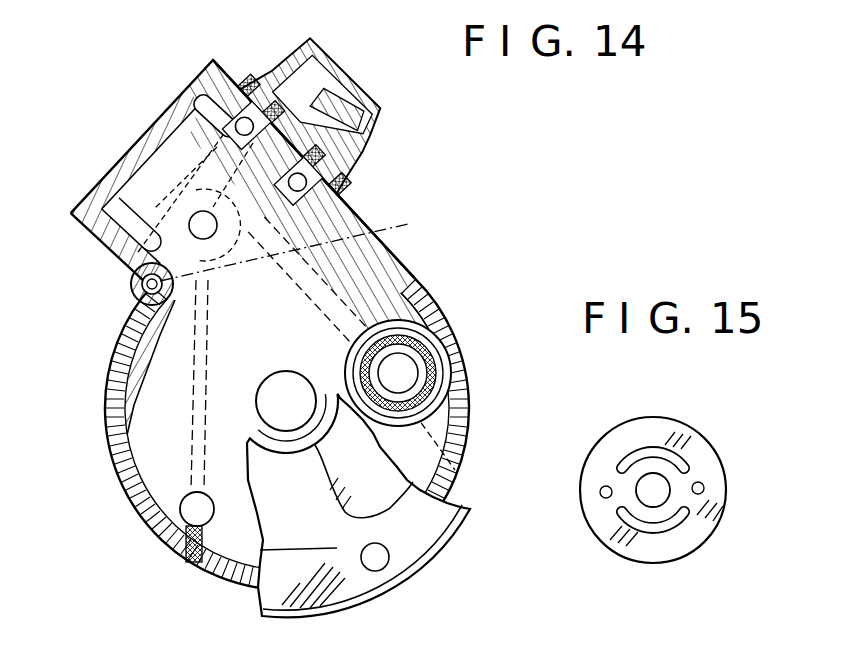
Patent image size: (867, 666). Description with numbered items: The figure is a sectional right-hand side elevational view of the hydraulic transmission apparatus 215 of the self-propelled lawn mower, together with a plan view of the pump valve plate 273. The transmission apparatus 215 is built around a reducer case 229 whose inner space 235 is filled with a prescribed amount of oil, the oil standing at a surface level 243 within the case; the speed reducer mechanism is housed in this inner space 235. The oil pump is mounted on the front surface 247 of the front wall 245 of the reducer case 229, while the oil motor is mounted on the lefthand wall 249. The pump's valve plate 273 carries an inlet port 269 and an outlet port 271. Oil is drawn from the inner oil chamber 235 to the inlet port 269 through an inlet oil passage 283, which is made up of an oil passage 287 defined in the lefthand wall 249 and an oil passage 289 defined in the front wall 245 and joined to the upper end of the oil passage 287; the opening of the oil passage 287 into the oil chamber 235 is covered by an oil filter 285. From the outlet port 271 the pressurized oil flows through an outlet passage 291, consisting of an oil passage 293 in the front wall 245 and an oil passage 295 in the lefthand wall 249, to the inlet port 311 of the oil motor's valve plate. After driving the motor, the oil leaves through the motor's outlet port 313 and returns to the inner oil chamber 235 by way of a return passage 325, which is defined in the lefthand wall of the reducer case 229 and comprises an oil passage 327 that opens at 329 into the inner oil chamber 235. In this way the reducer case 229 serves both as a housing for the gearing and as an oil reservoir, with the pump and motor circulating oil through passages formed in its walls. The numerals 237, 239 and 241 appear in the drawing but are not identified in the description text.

In FIG. 14, the transmission apparatus 215 is at (114, 315).
In FIG. 14, the reducer case 229 is at (400, 255).
In FIG. 14, the inner space 235 is at (302, 351).
In FIG. 14, the annular ring 237 is at (116, 440).
In FIG. 14, the chamber 239 is at (192, 174).
In FIG. 14, the cover wall 241 is at (133, 158).
In FIG. 14, the surface level 243 is at (308, 246).
In FIG. 14, the front wall 245 is at (250, 74).
In FIG. 14, the front surface 247 is at (346, 180).
In FIG. 14, the lefthand wall 249 is at (176, 132).
In FIG. 14, the inlet port 269 is at (318, 143).
In FIG. 15, the inlet port 269 is at (656, 450).
In FIG. 14, the outlet port 271 is at (302, 66).
In FIG. 15, the outlet port 271 is at (662, 532).
In FIG. 14, the valve plate 273 is at (340, 184).
In FIG. 15, the valve plate 273 is at (700, 437).
In FIG. 14, the inlet oil passage 283 is at (403, 267).
In FIG. 14, the oil filter 285 is at (432, 356).
In FIG. 14, the oil passage 287 is at (425, 300).
In FIG. 14, the oil passage 289 is at (313, 130).
In FIG. 14, the outlet passage 291 is at (182, 140).
In FIG. 14, the oil passage 293 is at (252, 76).
In FIG. 14, the oil passage 295 is at (112, 198).
In FIG. 14, the inlet port 311 is at (128, 262).
In FIG. 14, the outlet port 313 is at (237, 245).
In FIG. 14, the return passage 325 is at (200, 400).
In FIG. 14, the oil passage 327 is at (200, 340).
In FIG. 14, the opening 329 is at (188, 505).